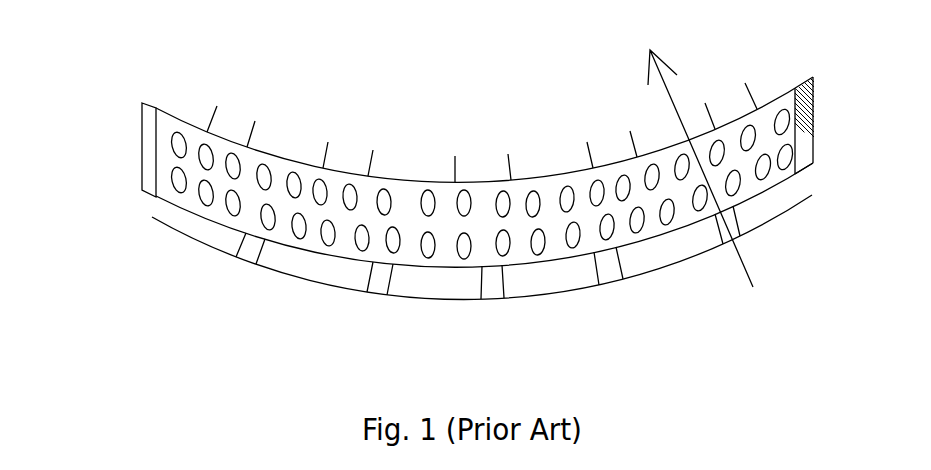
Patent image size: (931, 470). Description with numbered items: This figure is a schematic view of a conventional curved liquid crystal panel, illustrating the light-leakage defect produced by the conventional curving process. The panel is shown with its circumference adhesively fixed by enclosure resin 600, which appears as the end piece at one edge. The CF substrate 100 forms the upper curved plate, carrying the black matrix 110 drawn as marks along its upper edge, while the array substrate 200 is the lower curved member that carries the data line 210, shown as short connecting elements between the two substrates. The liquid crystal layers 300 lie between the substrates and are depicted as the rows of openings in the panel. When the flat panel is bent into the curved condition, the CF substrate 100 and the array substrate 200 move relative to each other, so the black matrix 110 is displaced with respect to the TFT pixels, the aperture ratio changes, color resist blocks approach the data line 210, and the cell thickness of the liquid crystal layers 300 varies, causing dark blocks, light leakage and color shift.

The CF substrate 100 is at (160, 100).
The black matrix 110 is at (360, 157).
The array substrate 200 is at (156, 214).
The data line 210 is at (383, 280).
The liquid crystal layers 300 is at (532, 210).
The enclosure resin 600 is at (148, 150).